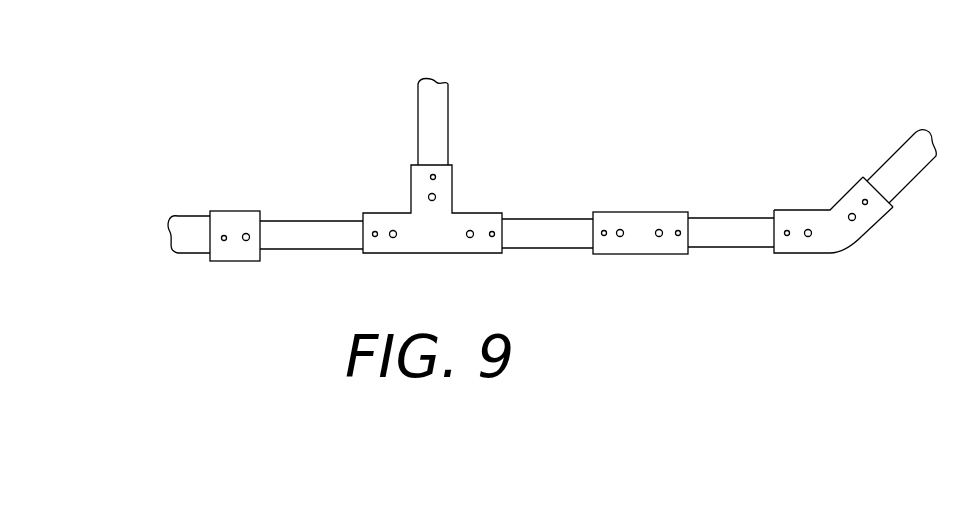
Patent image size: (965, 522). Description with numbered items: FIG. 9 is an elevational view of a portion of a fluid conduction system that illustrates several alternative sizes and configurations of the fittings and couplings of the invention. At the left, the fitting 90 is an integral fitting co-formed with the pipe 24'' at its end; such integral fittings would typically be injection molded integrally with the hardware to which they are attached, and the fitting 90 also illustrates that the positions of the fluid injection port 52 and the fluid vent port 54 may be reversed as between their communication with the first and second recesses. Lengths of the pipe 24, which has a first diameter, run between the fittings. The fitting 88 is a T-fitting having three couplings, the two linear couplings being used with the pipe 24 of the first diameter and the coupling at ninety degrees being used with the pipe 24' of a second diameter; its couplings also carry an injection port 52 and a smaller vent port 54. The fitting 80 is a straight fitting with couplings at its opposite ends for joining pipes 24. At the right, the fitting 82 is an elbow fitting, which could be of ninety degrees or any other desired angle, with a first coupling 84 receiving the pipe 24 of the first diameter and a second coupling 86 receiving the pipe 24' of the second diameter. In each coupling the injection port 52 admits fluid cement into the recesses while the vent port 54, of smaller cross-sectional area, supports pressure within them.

The pipe 24 is at (517, 238).
The pipe 24' is at (645, 141).
The pipe 24'' is at (183, 207).
The fluid injection port 52 is at (246, 241).
The fluid vent port 54 is at (224, 241).
The straight fitting 80 is at (645, 212).
The elbow fitting 82 is at (830, 209).
The first coupling 84 is at (792, 253).
The second coupling 86 is at (881, 212).
The T-fitting 88 is at (432, 253).
The integral fitting 90 is at (240, 211).